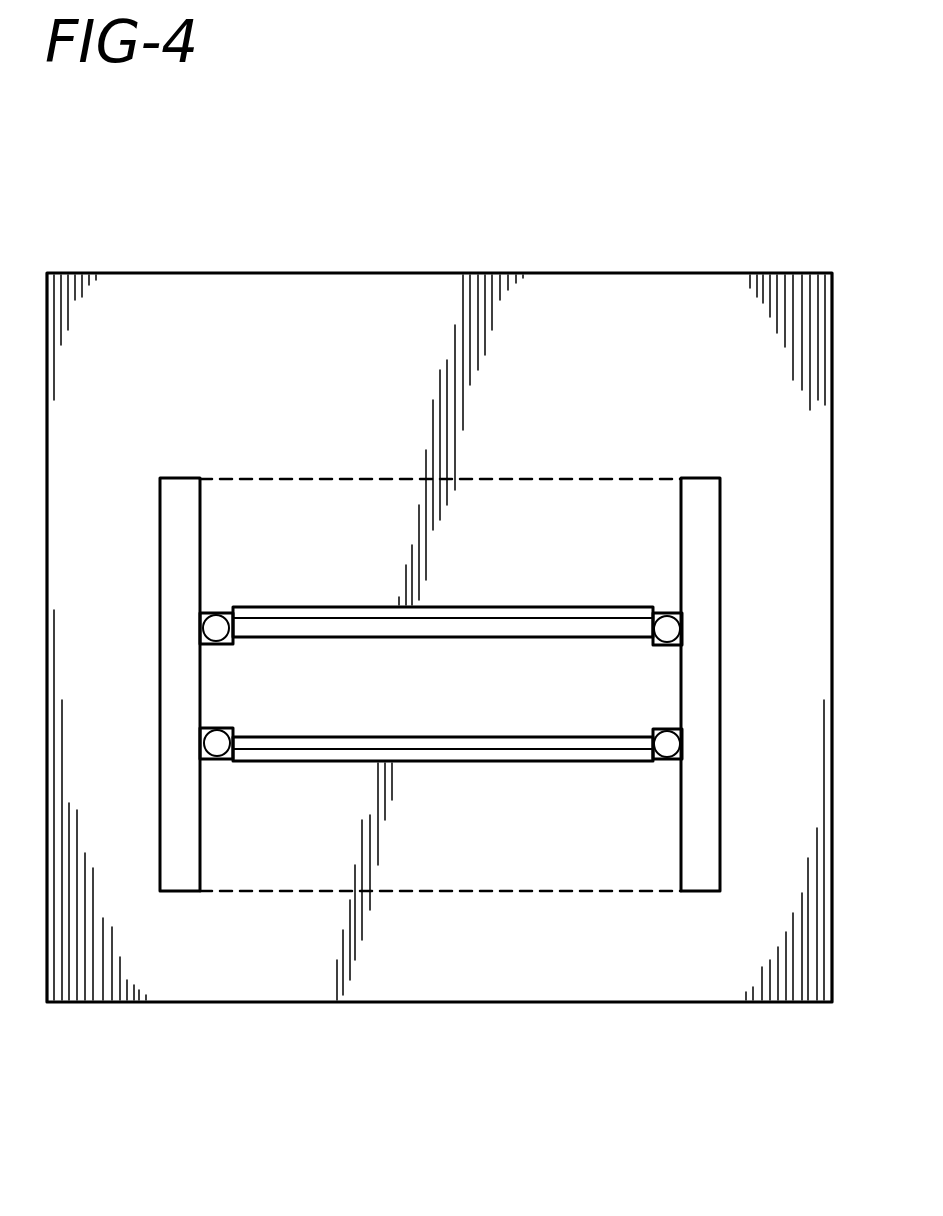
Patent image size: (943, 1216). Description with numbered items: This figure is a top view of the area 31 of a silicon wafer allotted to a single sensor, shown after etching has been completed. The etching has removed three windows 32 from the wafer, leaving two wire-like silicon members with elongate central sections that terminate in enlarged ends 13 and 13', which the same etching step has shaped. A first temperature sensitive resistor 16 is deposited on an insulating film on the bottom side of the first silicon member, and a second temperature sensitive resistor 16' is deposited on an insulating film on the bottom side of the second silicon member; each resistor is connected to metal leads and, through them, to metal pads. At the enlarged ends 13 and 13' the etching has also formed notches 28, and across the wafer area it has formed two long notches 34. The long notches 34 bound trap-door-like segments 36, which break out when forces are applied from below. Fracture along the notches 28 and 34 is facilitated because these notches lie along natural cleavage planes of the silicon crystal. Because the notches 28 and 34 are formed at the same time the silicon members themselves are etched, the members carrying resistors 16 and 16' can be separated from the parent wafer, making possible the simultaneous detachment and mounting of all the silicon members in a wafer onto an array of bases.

The enlarged end 13 is at (442, 774).
The enlarged end 13' is at (441, 595).
The temperature sensitive resistor 16 is at (443, 718).
The temperature sensitive resistor 16' is at (443, 646).
The notch 28 is at (200, 745).
The area of a silicon wafer 31 is at (615, 273).
The window 32 is at (333, 670).
The long notch 34 is at (573, 478).
The trap-door-like segment 36 is at (527, 497).